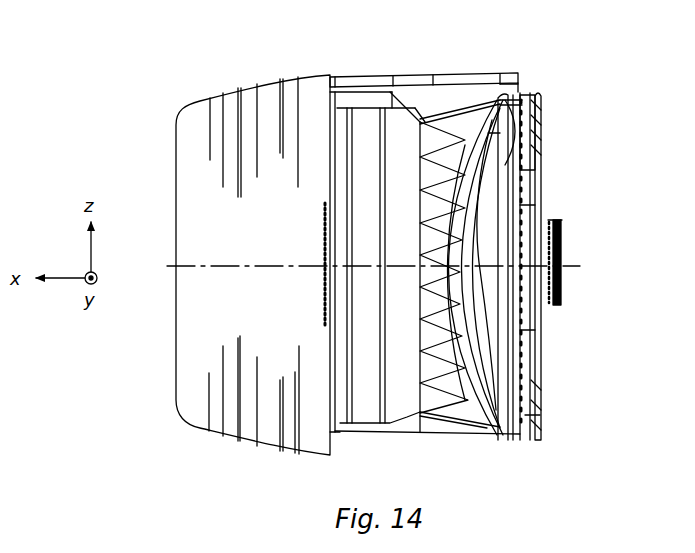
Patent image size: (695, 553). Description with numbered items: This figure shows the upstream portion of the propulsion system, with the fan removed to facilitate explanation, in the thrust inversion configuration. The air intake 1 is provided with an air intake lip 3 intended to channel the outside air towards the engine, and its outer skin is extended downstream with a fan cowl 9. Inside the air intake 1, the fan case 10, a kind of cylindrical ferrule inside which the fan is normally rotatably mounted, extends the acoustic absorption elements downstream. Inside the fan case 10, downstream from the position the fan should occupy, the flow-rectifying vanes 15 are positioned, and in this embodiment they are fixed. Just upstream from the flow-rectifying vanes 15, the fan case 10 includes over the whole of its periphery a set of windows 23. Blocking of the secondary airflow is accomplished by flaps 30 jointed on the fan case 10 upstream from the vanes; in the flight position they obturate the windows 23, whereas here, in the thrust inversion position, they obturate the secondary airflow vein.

The air intake 1 is at (213, 284).
The air intake lip 3 is at (176, 353).
The fan cowl 9 is at (368, 76).
The fan case 10 is at (368, 430).
The flow-rectifying vanes 15 is at (538, 396).
The windows 23 is at (443, 327).
The flaps 30 is at (480, 213).